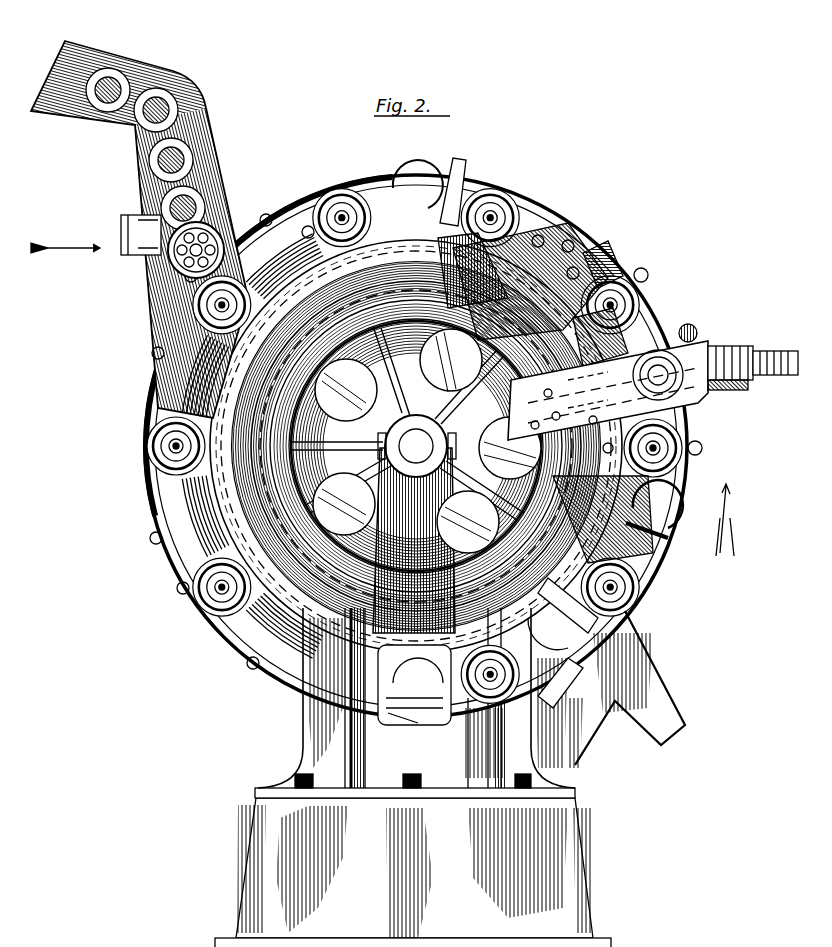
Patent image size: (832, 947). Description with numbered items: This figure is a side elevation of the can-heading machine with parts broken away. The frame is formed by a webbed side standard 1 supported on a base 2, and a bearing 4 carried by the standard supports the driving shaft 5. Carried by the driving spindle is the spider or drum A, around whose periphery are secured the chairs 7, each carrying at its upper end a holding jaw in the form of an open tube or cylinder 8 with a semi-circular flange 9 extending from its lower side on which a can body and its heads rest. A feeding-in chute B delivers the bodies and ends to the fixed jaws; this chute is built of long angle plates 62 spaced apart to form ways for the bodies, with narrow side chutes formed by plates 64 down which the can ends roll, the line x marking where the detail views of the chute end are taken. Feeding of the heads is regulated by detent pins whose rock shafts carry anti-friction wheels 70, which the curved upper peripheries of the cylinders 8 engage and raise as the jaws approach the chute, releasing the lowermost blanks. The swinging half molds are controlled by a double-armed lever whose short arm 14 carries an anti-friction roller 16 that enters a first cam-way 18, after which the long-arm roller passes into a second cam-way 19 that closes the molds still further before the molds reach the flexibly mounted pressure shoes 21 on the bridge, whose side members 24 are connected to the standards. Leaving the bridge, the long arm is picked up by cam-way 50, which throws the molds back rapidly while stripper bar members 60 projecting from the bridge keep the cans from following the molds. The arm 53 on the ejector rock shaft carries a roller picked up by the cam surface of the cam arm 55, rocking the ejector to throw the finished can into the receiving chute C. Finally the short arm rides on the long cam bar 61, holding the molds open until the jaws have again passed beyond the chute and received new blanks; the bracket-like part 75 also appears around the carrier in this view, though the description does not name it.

The webbed side standard 1 is at (307, 713).
The base 2 is at (530, 862).
The bearing 4 is at (433, 388).
The driving shaft 5 is at (372, 402).
The chair 7 is at (500, 255).
The holding or receiving jaw tube 8 is at (588, 390).
The semi-circular flange 9 is at (770, 340).
The short arm 14 is at (300, 195).
The anti-friction roller 16 is at (160, 527).
The first cam-way 18 is at (462, 172).
The second cam-way 19 is at (590, 262).
The pressure shoe 21 is at (698, 335).
The side member of bridge 24 is at (684, 320).
The cam-way 50 is at (665, 530).
The arm 53 is at (560, 250).
The cam arm 55 is at (603, 588).
The stripper bar member 60 is at (682, 448).
The long cam bar 61 is at (580, 648).
The angle plate 62 is at (90, 50).
The side chute plate 64 is at (183, 80).
The anti-friction roller or wheel 70 is at (340, 185).
The bracket 75 is at (262, 200).
The spider or drum A is at (575, 612).
The feeding-in chute B is at (236, 179).
The receiving chute C is at (653, 693).
The section line x— x is at (197, 147).